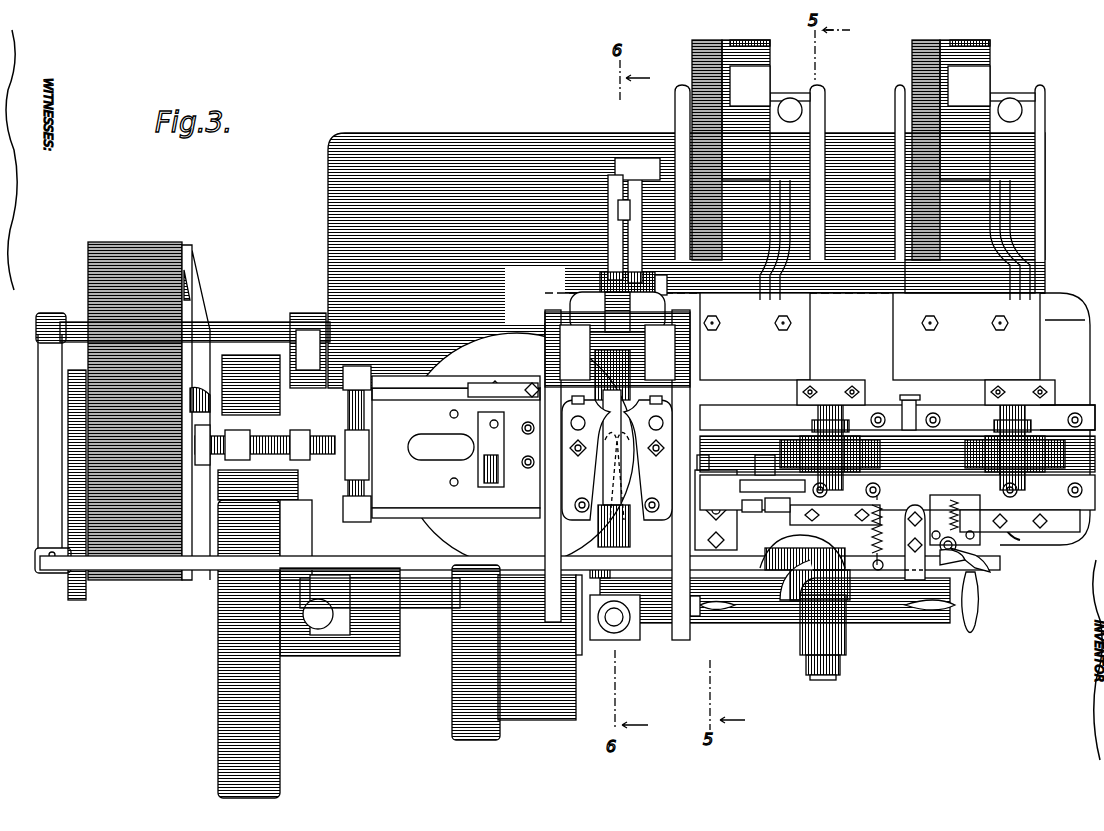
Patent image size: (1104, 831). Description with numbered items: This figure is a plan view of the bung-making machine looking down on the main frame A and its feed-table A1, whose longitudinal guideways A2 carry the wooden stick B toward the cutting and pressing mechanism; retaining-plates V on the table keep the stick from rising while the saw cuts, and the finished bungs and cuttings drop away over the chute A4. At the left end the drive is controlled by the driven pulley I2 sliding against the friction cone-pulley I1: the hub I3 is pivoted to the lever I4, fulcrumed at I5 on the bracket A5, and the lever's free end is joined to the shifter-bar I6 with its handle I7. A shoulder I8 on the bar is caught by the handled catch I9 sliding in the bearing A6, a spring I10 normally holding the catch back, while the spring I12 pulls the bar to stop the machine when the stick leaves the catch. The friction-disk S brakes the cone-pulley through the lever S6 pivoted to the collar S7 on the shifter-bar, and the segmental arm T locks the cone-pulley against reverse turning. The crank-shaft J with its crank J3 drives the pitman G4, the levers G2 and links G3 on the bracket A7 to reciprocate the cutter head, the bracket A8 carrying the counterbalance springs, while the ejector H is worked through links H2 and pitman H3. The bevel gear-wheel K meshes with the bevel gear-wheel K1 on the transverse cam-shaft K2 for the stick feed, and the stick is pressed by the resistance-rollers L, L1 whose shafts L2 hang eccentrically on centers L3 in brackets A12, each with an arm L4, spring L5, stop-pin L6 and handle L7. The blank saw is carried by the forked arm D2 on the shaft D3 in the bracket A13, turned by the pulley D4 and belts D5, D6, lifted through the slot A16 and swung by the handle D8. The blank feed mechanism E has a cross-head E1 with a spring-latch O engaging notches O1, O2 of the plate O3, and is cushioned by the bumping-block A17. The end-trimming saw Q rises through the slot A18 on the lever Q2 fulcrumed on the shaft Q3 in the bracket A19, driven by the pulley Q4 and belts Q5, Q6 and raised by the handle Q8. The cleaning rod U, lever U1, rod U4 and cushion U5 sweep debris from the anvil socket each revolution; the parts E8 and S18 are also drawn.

The frame A is at (330, 221).
The feed-table A1 is at (1058, 316).
The guideway A2 is at (897, 447).
The chute A4 is at (548, 705).
The bracket A5 is at (244, 326).
The bearing A6 is at (990, 550).
The bracket A7 is at (572, 300).
The bracket A8 is at (617, 458).
The bracket A12 is at (866, 376).
The bracket A13 is at (870, 336).
The slot A16 is at (462, 390).
The bumping-block A17 is at (268, 420).
The slot A18 is at (915, 394).
The bracket A19 is at (1035, 272).
The wooden stick B is at (1082, 440).
The forked arm D2 is at (800, 142).
The shaft D3 is at (678, 105).
The pulley D4 is at (762, 72).
The belt D5 is at (757, 40).
The belt D6 is at (708, 42).
The handle D8 is at (716, 612).
The feed mechanism E is at (456, 448).
The cross-head E1 is at (428, 398).
The vertical rod E8 is at (373, 444).
The levers G2 is at (684, 392).
The links G3 is at (548, 350).
The pitman G4 is at (622, 633).
The ejector H is at (620, 395).
The links H2 is at (596, 386).
The pitman H3 is at (598, 538).
The friction cone-pulley I1 is at (192, 282).
The driven pulley I2 is at (97, 286).
The hub I3 is at (84, 392).
The lever I4 is at (40, 482).
The fulcrum I5 is at (38, 337).
The shifter-bar I6 is at (208, 572).
The handle I7 is at (978, 608).
The shoulder I8 is at (972, 572).
The catch I9 is at (978, 560).
The spring I10 is at (948, 522).
The spring I12 is at (864, 532).
The crank-shaft J is at (416, 640).
The crank J3 is at (584, 645).
The bevel gear-wheel K is at (785, 545).
The bevel gear-wheel K1 is at (798, 612).
The cam-shaft K2 is at (824, 680).
The resistance-roller L is at (798, 448).
The resistance-roller L1 is at (1058, 440).
The shaft L2 is at (870, 418).
The centers L3 is at (840, 378).
The arm L4 is at (790, 512).
The spring L5 is at (750, 516).
The stop-pin L6 is at (780, 515).
The handle L7 is at (812, 488).
The spring-latch O is at (482, 416).
The notch O1 is at (493, 379).
The notch O2 is at (537, 380).
The plate O3 is at (508, 392).
The circular saw Q is at (904, 410).
The lever Q2 is at (1018, 228).
The shaft Q3 is at (1043, 105).
The pulley Q4 is at (990, 60).
The belt Q5 is at (973, 40).
The belt Q6 is at (925, 42).
The handle Q8 is at (938, 612).
The friction-disk S is at (196, 475).
The lever S6 is at (300, 512).
The collar S7 is at (300, 548).
The block S18 is at (306, 322).
The segmental arm T is at (190, 405).
The rod U is at (636, 158).
The lever U1 is at (622, 165).
The rod U4 is at (600, 282).
The cushion U5 is at (659, 284).
The retaining-plates V is at (716, 502).